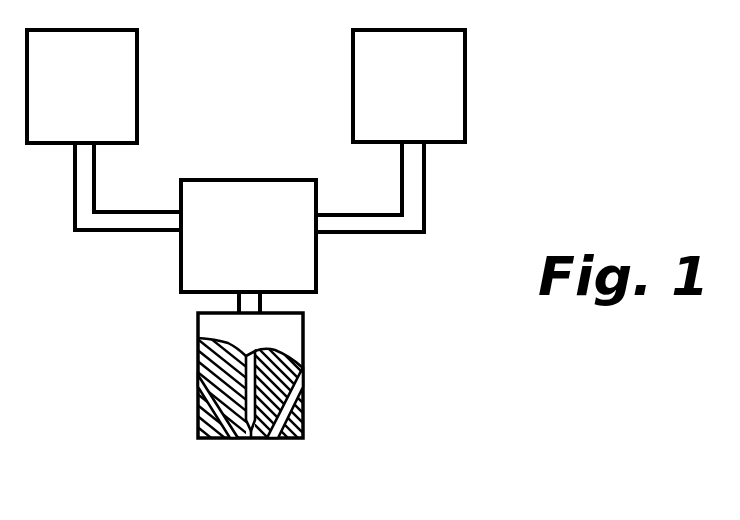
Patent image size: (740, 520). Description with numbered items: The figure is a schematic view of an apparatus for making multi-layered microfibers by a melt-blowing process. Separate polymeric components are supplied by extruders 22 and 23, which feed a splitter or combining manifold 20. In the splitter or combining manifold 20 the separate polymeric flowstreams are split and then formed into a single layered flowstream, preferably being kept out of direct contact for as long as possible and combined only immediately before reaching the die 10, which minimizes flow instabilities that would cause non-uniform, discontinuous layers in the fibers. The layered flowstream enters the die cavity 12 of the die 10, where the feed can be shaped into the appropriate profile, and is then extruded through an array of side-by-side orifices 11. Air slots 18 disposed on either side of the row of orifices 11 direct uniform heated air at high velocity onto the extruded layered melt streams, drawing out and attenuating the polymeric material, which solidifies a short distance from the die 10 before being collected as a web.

The die 10 is at (310, 340).
The orifices 11 is at (250, 440).
The die cavity 12 is at (253, 373).
The air slots 18 is at (212, 392).
The splitter or combining manifold 20 is at (250, 178).
The extruder 22 is at (137, 70).
The extruder 23 is at (465, 70).